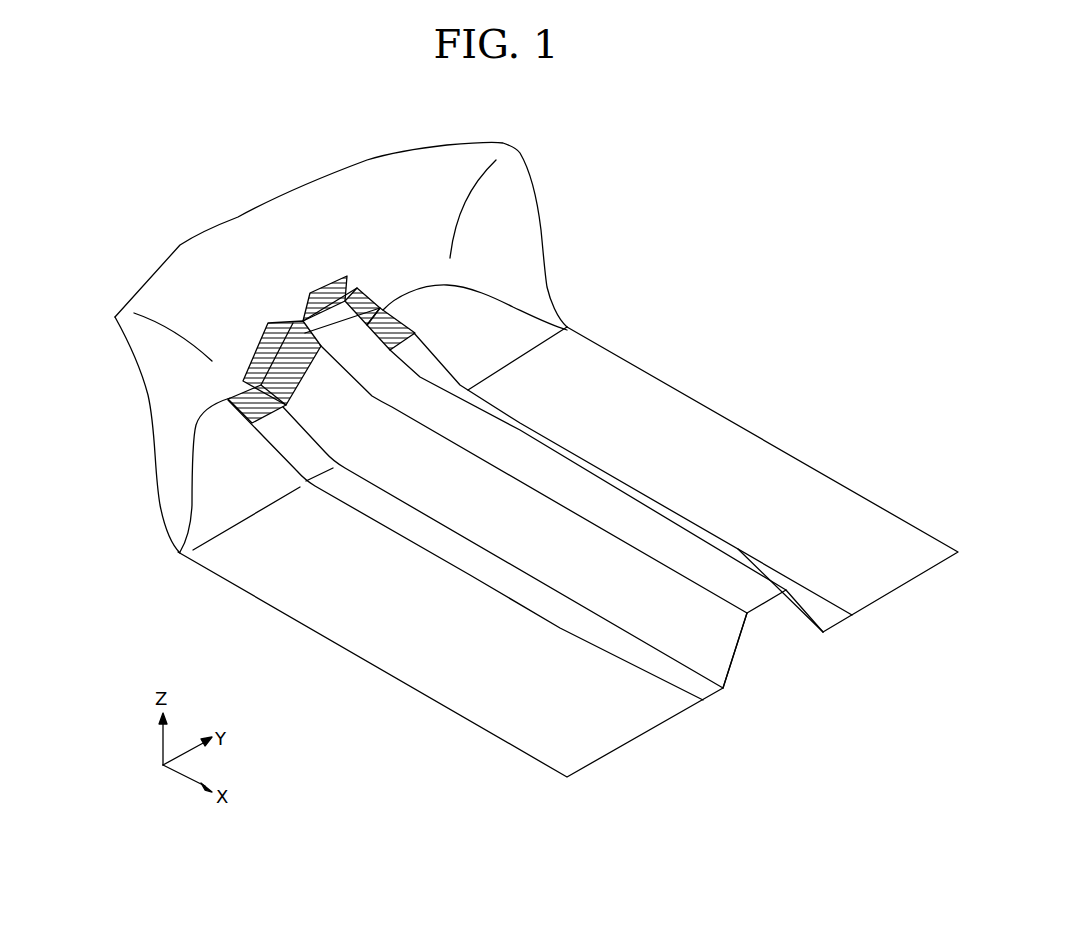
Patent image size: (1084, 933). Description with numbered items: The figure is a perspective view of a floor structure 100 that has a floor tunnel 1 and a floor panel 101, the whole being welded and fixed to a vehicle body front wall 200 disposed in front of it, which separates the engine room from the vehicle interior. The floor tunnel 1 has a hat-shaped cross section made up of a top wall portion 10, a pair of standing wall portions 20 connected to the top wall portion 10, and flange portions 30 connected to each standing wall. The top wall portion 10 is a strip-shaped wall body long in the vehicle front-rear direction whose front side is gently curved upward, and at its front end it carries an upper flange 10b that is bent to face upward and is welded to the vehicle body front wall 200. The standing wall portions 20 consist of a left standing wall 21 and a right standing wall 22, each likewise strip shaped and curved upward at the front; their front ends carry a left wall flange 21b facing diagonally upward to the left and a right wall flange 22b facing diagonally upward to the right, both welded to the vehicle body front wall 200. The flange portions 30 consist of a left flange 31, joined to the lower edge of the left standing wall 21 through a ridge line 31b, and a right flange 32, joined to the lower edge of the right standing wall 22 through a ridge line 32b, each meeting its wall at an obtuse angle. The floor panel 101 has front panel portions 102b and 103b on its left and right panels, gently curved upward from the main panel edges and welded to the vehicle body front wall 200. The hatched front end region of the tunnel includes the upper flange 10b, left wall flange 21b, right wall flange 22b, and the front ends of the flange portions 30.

The floor tunnel 1 is at (664, 448).
The top wall portion 10 is at (472, 437).
The upper flange 10b is at (331, 283).
The pair of standing wall portions 20 is at (677, 607).
The left standing wall 21 is at (412, 475).
The left wall flange 21b is at (250, 358).
The right standing wall 22 is at (548, 478).
The right wall flange 22b is at (378, 297).
The flange portions 30 is at (422, 370).
The left flange 31 is at (562, 612).
The ridge line 31b is at (500, 560).
The right flange 32 is at (672, 513).
The ridge line 32b is at (613, 510).
The floor structure 100 is at (806, 275).
The floor panel 101 is at (795, 440).
The front panel portion 102b is at (205, 498).
The front panel portion 103b is at (481, 312).
The vehicle body front wall 200 is at (236, 217).